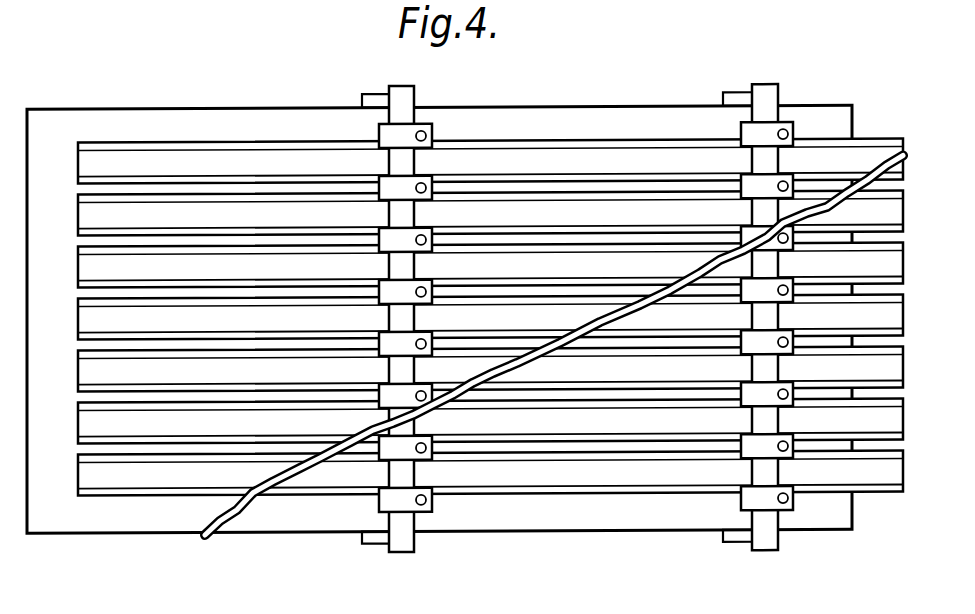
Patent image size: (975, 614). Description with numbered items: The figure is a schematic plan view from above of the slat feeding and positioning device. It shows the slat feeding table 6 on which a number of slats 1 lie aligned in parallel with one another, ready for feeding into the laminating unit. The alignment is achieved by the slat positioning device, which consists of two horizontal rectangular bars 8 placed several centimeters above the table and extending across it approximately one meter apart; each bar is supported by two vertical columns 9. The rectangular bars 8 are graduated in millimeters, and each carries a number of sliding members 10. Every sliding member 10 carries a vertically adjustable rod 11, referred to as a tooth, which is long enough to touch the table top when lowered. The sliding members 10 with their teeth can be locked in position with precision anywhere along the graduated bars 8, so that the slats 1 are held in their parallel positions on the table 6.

The slat 1 is at (887, 478).
The slat feeding table 6 is at (146, 547).
The horizontal rectangular bar 8 is at (406, 543).
The vertical column 9 is at (372, 540).
The sliding member 10 is at (762, 501).
The vertically adjustable rod 11 is at (786, 508).